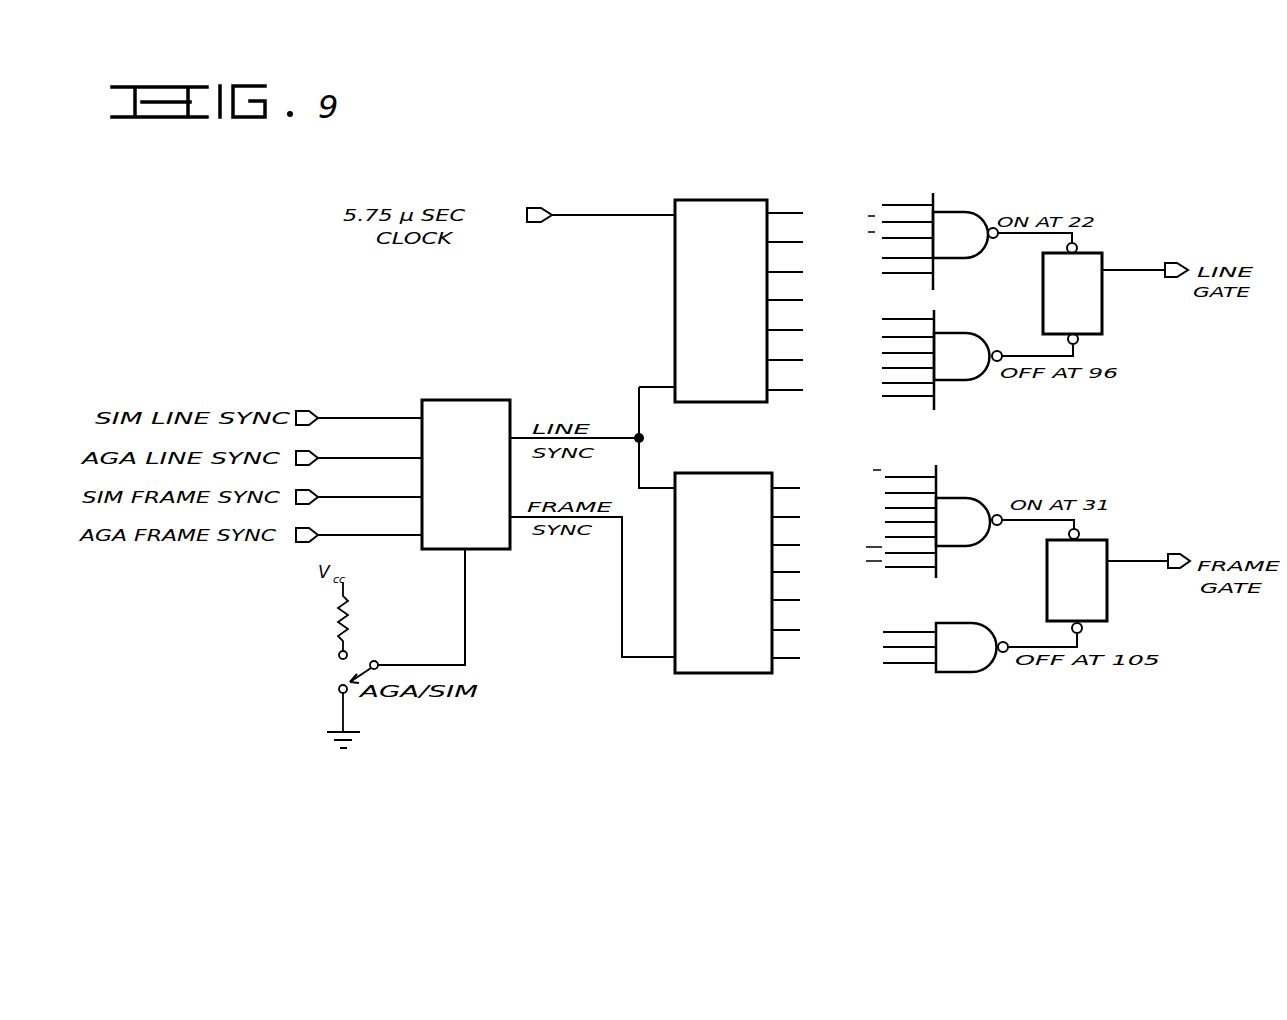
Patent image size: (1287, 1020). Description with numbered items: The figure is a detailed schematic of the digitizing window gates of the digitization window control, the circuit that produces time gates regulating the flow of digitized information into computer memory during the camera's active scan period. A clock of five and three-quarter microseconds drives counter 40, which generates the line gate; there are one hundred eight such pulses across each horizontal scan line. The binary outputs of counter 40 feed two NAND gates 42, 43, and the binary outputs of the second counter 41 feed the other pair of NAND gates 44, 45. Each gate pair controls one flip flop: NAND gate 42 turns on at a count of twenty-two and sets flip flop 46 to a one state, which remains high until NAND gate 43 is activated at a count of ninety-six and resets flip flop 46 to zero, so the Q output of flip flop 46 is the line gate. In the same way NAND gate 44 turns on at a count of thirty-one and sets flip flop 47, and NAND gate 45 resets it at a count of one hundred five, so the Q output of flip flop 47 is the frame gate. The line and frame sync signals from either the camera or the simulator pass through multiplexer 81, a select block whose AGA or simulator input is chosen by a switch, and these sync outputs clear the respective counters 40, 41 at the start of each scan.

The counter 40 is at (740, 200).
The counter 41 is at (720, 473).
The NAND gate 42 is at (950, 212).
The NAND gate 43 is at (962, 333).
The NAND gate 44 is at (965, 498).
The NAND gate 45 is at (968, 623).
The flip flop 46 is at (1090, 253).
The flip flop 47 is at (1098, 540).
The multiplexer 81 is at (457, 400).